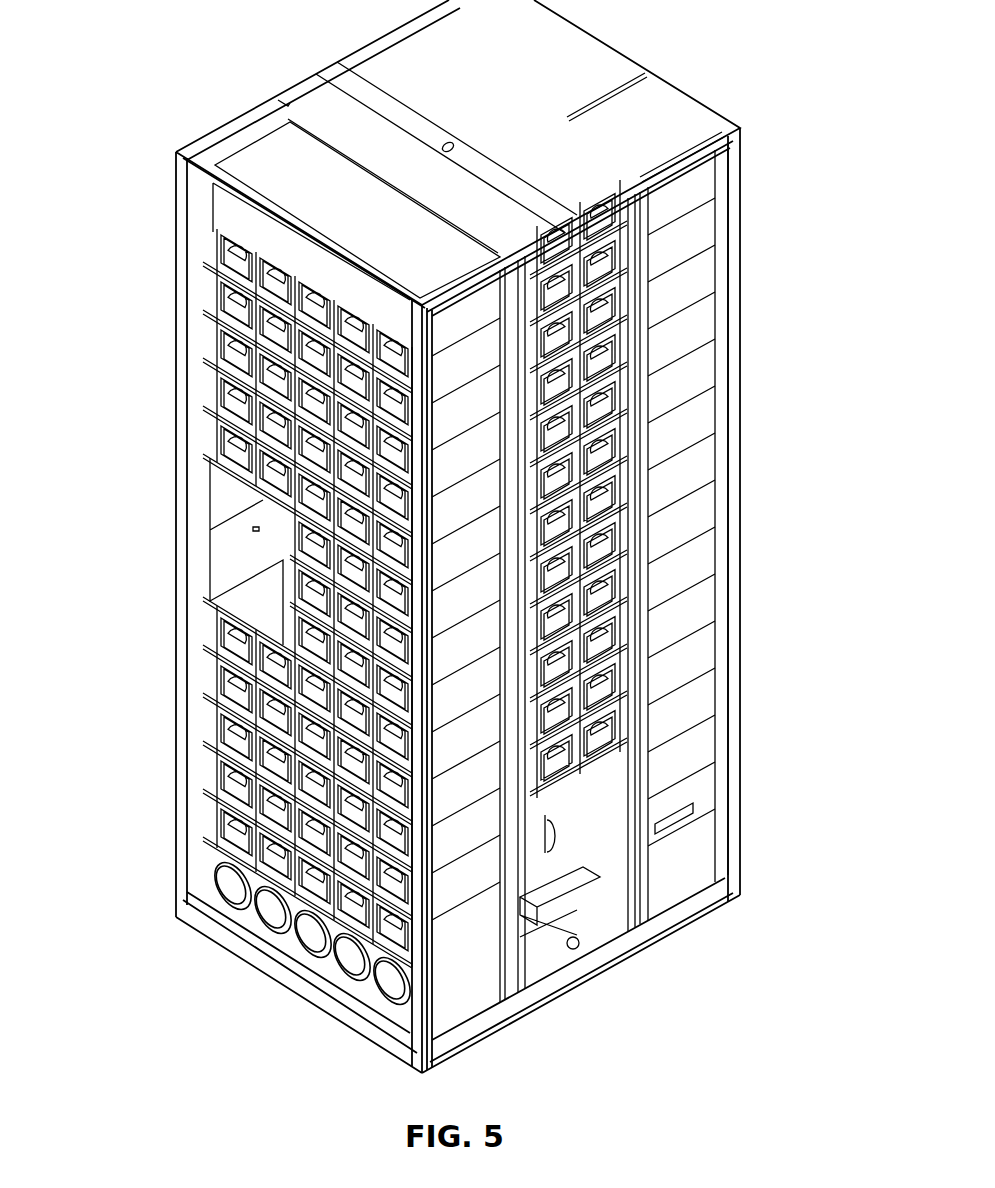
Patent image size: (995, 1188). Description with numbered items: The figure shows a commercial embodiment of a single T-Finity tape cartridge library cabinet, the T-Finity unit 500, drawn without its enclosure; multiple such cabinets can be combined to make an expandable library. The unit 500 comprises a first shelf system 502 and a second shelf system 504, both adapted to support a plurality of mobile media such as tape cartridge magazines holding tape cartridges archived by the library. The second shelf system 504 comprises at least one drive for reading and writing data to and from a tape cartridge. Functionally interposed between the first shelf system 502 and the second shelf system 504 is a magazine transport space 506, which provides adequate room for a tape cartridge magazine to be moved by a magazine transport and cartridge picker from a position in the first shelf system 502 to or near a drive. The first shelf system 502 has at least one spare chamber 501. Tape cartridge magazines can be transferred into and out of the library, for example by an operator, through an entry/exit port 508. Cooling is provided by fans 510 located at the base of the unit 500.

The T-Finity unit 500 is at (455, 536).
The spare chamber 501 is at (322, 830).
The first shelf system 502 is at (237, 598).
The second shelf system 504 is at (766, 546).
The magazine transport space 506 is at (604, 853).
The entry/exit port 508 is at (240, 567).
The fans 510 is at (226, 946).